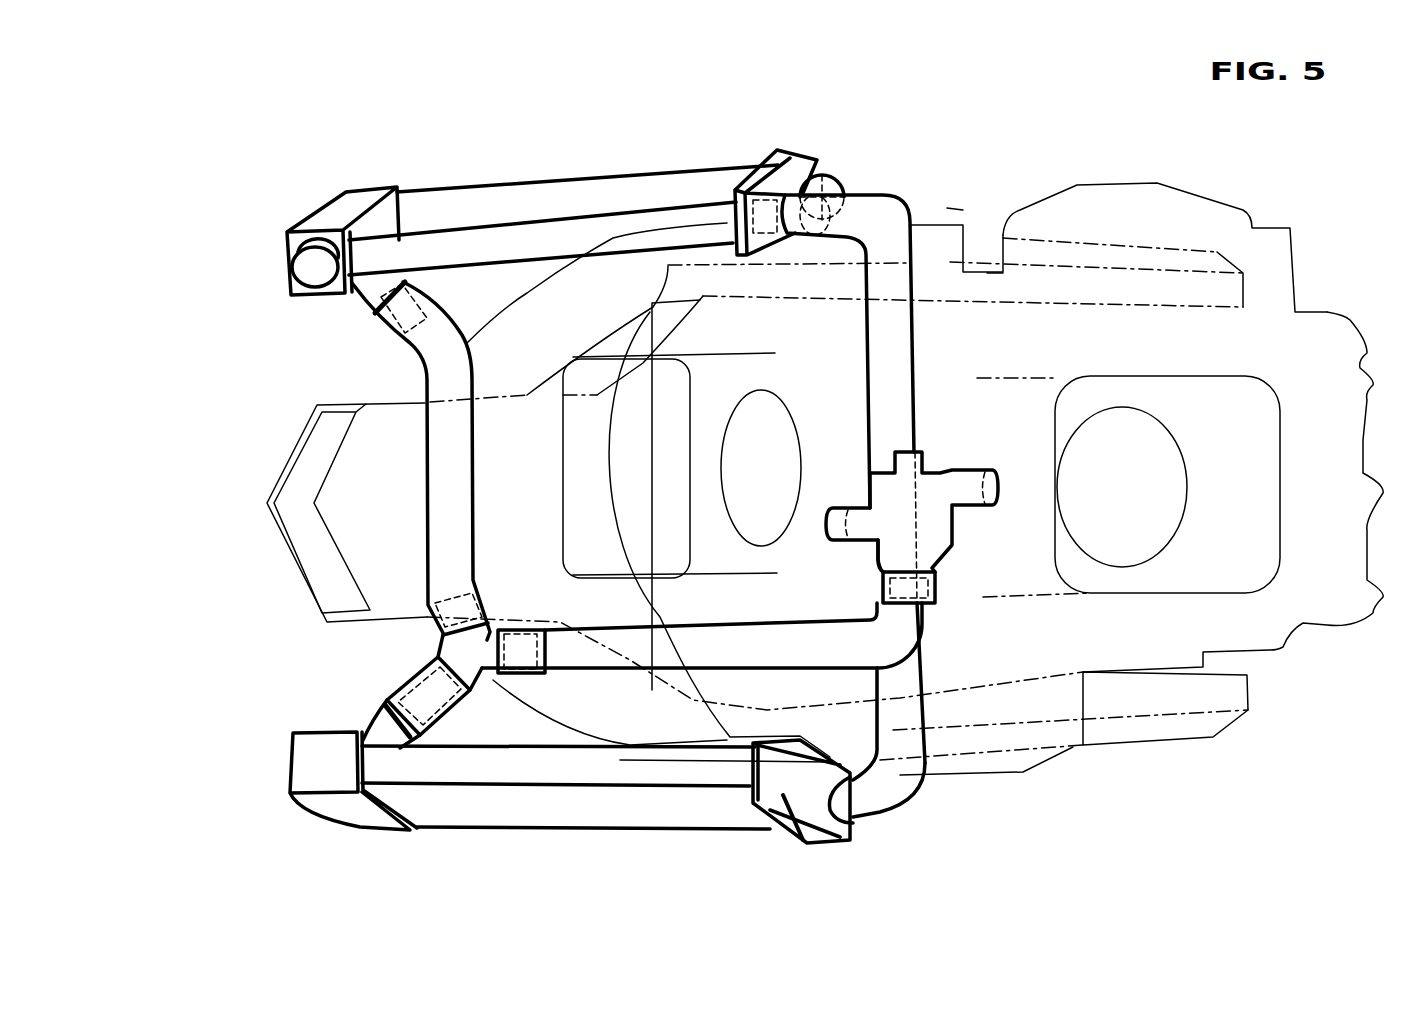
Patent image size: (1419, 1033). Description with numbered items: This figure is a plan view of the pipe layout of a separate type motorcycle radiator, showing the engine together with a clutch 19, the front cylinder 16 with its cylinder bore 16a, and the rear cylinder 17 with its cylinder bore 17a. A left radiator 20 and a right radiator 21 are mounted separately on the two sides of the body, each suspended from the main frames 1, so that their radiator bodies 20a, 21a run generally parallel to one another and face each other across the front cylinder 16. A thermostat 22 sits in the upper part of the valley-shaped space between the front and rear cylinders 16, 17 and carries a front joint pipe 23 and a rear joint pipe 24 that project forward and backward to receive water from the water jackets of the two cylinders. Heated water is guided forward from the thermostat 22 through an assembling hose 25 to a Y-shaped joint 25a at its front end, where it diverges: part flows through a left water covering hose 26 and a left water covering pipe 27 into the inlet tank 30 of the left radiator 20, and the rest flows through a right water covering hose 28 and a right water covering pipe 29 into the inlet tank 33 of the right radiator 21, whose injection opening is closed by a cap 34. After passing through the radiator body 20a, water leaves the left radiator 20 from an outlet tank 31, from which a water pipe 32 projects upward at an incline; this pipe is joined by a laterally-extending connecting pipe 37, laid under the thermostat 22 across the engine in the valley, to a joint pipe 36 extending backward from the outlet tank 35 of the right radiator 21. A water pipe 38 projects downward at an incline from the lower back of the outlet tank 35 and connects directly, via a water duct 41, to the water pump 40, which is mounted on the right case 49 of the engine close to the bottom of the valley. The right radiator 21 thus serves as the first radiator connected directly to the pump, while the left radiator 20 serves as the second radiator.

The main frame 1 is at (1120, 255).
The front cylinder 16 is at (573, 500).
The cylinder bore of the front cylinder 16a is at (797, 432).
The rear cylinder 17 is at (1273, 458).
The cylinder bore of the rear cylinder 17a is at (1187, 493).
The clutch 19 is at (1170, 192).
The left radiator 20 is at (546, 793).
The radiator body 20a is at (543, 812).
The right radiator 21 is at (541, 191).
The radiator body 21a is at (575, 203).
The thermostat 22 is at (920, 516).
The front joint pipe 23 is at (863, 537).
The rear joint pipe 24 is at (963, 470).
The assembling hose 25 is at (770, 657).
The Y-shaped joint 25a is at (485, 620).
The left water covering hose 26 is at (432, 662).
The left water covering pipe 27 is at (373, 721).
The right water covering hose 28 is at (427, 360).
The right water covering pipe 29 is at (362, 300).
The inlet tank 30 is at (307, 767).
The outlet tank 31 is at (773, 832).
The water pipe 32 is at (855, 818).
The inlet tank 33 is at (303, 213).
The cap 34 is at (302, 273).
The outlet tank 35 is at (786, 164).
The joint pipe 36 is at (872, 213).
The laterally-extending connecting pipe 37 is at (913, 337).
The water pipe 38 is at (832, 172).
The water pump 40 is at (947, 208).
The water duct 41 is at (853, 175).
The right case 49 is at (987, 273).